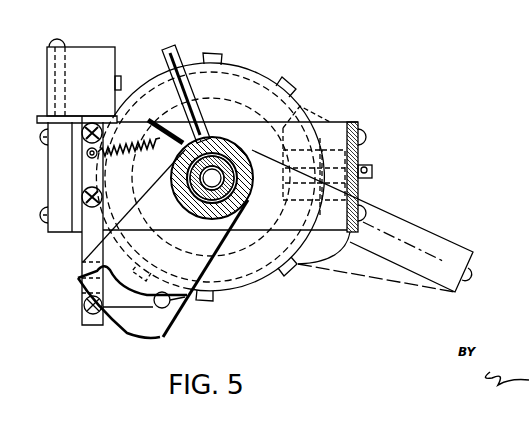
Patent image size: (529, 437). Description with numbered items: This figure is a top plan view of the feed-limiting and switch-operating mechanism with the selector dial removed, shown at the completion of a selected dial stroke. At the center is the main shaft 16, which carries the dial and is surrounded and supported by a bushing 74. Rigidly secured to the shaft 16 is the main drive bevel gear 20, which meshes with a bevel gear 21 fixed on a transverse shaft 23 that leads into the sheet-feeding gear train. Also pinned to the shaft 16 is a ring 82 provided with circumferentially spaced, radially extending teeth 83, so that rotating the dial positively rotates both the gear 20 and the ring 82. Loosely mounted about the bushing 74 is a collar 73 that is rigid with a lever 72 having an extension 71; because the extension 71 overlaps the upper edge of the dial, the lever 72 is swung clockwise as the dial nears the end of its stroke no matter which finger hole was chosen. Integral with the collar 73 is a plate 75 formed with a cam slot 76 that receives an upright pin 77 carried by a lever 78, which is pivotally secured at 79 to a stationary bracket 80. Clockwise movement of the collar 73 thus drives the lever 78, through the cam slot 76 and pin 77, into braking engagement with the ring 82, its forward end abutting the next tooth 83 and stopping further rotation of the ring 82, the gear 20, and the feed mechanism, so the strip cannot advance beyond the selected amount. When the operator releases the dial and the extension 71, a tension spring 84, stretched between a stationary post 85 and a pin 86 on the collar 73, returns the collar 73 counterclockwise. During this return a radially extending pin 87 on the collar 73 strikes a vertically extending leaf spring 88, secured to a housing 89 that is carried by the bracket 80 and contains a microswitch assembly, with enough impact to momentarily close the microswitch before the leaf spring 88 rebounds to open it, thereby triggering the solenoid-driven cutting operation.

The shaft 16 is at (238, 196).
The main drive bevel gear 20 is at (305, 110).
The bevel gear 21 is at (345, 122).
The shaft 23 is at (368, 170).
The extension 71 is at (445, 252).
The lever 72 is at (360, 262).
The collar 73 is at (205, 143).
The bushing 74 is at (222, 168).
The plate 75 is at (190, 290).
The cam slot 76 is at (205, 270).
The upright pin 77 is at (180, 300).
The lever 78 is at (128, 322).
The pivot 79 is at (88, 312).
The stationary bracket 80 is at (82, 264).
The ring 82 is at (255, 71).
The teeth 83 is at (221, 54).
The tension spring 84 is at (146, 142).
The stationary post 85 is at (88, 153).
The pin 86 is at (185, 135).
The radially extending pin 87 is at (180, 50).
The leaf spring 88 is at (121, 76).
The housing 89 is at (97, 52).